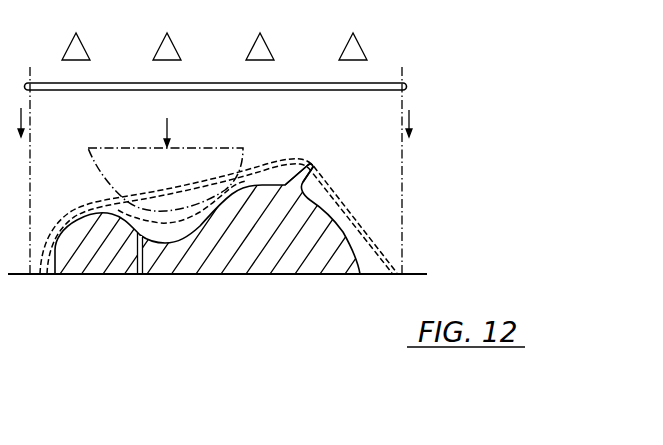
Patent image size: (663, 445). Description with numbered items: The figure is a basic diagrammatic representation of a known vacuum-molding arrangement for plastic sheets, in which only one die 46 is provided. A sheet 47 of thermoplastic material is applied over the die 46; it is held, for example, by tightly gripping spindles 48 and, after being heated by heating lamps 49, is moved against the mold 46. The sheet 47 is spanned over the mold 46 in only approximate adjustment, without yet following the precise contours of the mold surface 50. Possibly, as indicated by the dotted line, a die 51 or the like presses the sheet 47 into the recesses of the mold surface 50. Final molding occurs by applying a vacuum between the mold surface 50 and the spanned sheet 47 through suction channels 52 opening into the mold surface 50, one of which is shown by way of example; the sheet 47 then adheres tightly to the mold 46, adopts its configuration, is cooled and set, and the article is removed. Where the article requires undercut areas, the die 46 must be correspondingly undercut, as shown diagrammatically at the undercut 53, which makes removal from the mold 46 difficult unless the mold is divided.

The die 46 is at (278, 246).
The sheet 47 is at (345, 91).
The spindles 48 is at (402, 178).
The heating lamps 49 is at (67, 50).
The mold surface 50 is at (287, 182).
The die 51 is at (107, 147).
The suction channels 52 is at (147, 275).
The undercut 53 is at (303, 184).